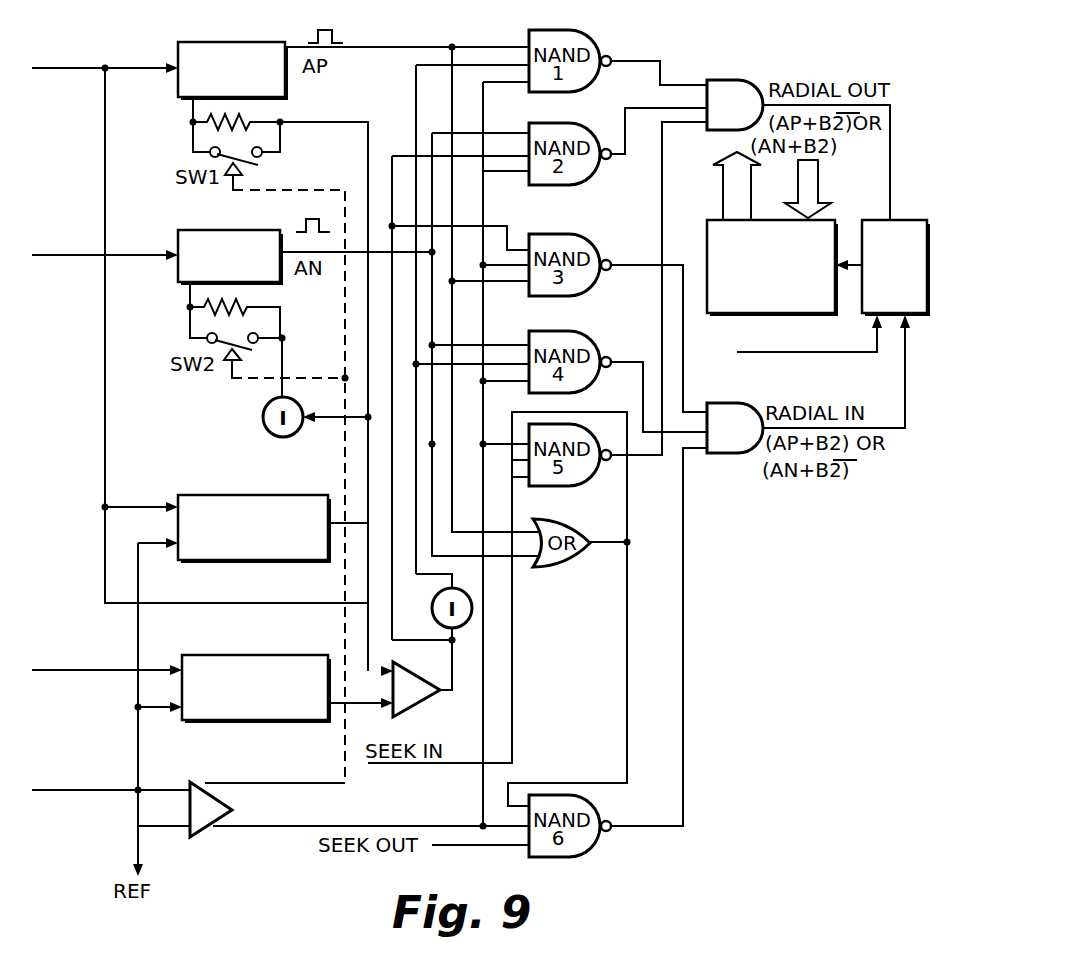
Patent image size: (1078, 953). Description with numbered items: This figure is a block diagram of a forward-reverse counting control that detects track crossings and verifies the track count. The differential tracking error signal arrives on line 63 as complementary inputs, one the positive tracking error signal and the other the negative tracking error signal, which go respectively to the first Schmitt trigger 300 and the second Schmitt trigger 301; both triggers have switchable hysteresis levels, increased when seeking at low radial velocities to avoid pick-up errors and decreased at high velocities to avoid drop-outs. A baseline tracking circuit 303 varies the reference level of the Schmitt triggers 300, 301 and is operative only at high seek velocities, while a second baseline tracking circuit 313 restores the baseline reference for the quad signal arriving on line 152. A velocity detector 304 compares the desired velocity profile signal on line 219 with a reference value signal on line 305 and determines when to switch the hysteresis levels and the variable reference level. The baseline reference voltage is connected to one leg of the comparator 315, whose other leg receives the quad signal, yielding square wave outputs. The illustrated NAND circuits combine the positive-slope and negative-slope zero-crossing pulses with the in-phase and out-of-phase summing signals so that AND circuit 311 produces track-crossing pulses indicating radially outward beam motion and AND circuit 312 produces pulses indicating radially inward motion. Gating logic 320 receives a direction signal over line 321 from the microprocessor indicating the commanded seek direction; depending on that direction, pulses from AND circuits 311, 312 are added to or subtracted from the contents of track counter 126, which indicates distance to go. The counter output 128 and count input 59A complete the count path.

The line 63 is at (83, 70).
The Schmitt trigger ST1 300 is at (245, 42).
The Schmitt trigger ST2 301 is at (232, 230).
The baseline tracking circuit 303 is at (272, 495).
The baseline tracking circuit 313 is at (265, 655).
The quadrature signal line 152 is at (107, 673).
The line 219 is at (115, 790).
The velocity detector 304 is at (205, 780).
The line 305 is at (200, 835).
The comparator 315 is at (420, 706).
The AND circuit 311 is at (762, 65).
The AND circuit 312 is at (762, 375).
The track counter 126 is at (768, 220).
The gating logic 320 is at (888, 218).
The count output 128 is at (715, 195).
The count input 59A is at (815, 162).
The line 321 is at (848, 352).